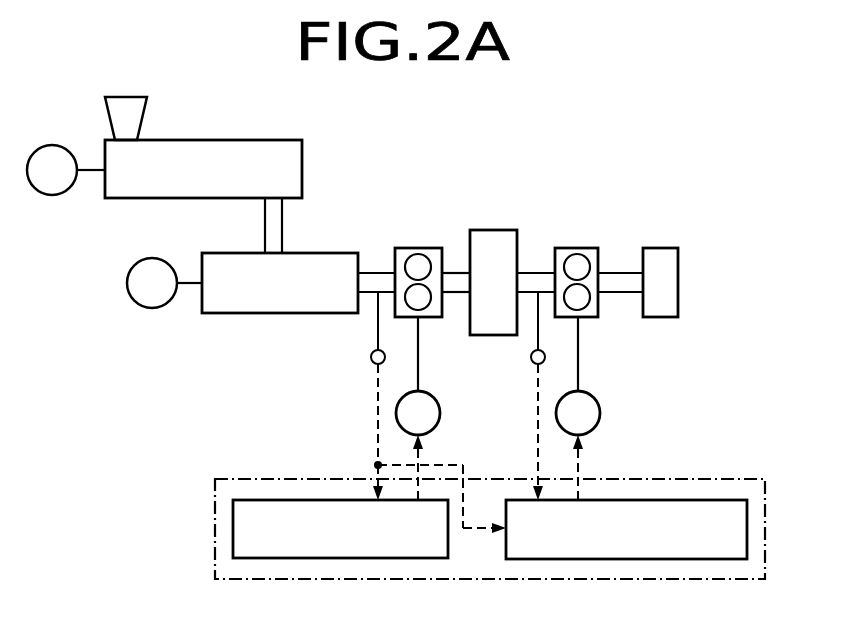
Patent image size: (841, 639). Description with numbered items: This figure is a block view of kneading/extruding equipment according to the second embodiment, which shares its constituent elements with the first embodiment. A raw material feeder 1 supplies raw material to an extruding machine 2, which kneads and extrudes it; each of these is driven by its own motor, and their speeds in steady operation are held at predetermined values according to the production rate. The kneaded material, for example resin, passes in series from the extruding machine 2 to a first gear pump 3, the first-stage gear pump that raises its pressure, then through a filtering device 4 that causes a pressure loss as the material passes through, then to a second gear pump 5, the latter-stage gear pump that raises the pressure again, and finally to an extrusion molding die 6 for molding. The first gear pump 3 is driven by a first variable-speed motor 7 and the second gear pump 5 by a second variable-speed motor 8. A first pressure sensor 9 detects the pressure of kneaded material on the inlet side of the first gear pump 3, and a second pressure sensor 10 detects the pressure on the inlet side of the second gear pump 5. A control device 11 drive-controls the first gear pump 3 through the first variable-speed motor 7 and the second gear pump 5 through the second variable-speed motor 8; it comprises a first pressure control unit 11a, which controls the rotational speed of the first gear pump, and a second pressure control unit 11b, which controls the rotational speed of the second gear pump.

The raw material feeder 1 is at (249, 140).
The extruding machine 2 is at (337, 253).
The first gear pump 3 is at (418, 248).
The filtering device 4 is at (495, 230).
The second gear pump 5 is at (577, 248).
The extrusion molding die 6 is at (662, 248).
The first variable-speed motor 7 is at (440, 414).
The second variable-speed motor 8 is at (600, 414).
The first pressure sensor 9 is at (370, 358).
The second pressure sensor 10 is at (530, 358).
The control device 11 is at (490, 507).
The first pressure control unit 11a is at (347, 559).
The second pressure control unit 11b is at (648, 560).